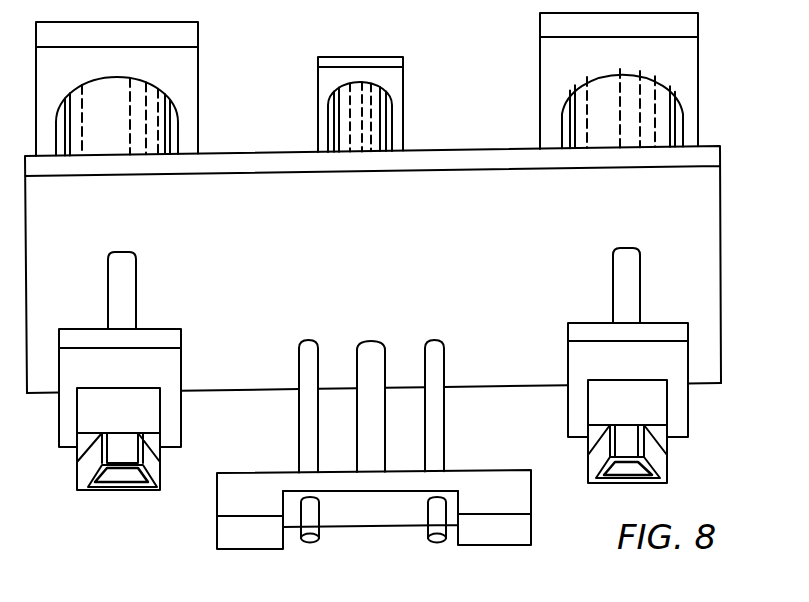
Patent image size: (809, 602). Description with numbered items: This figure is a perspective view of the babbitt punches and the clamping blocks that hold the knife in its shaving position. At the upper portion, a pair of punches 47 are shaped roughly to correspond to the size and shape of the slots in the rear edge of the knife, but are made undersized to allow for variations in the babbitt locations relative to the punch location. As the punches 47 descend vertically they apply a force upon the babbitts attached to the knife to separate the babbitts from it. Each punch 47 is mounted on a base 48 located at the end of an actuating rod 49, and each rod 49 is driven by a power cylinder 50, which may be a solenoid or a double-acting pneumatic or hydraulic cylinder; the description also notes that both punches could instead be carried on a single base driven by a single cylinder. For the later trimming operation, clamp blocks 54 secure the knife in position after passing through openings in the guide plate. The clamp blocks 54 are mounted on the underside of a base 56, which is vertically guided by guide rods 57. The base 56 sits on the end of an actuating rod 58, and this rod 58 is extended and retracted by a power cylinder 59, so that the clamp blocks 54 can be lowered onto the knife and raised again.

The punches 47 is at (658, 432).
The bases 48 is at (642, 370).
The actuating rods 49 is at (632, 286).
The power cylinders 50 is at (585, 112).
The clamp blocks 54 is at (337, 473).
The base 56 is at (262, 488).
The guide rods 57 is at (445, 420).
The actuating rod 58 is at (385, 362).
The power cylinder 59 is at (403, 95).